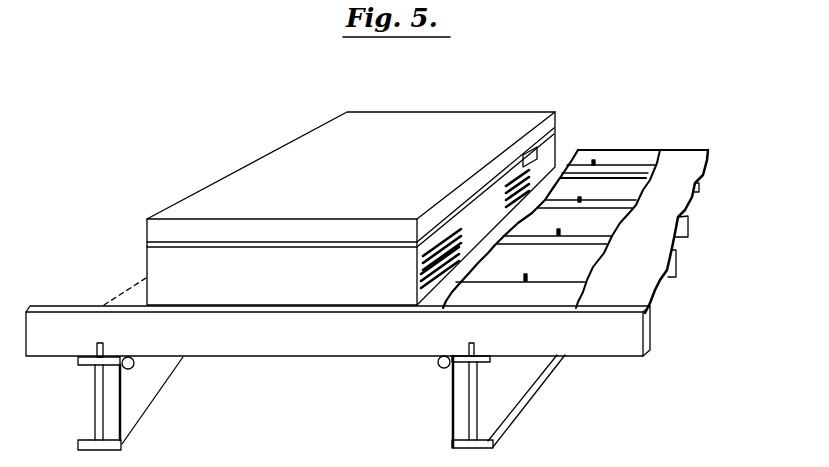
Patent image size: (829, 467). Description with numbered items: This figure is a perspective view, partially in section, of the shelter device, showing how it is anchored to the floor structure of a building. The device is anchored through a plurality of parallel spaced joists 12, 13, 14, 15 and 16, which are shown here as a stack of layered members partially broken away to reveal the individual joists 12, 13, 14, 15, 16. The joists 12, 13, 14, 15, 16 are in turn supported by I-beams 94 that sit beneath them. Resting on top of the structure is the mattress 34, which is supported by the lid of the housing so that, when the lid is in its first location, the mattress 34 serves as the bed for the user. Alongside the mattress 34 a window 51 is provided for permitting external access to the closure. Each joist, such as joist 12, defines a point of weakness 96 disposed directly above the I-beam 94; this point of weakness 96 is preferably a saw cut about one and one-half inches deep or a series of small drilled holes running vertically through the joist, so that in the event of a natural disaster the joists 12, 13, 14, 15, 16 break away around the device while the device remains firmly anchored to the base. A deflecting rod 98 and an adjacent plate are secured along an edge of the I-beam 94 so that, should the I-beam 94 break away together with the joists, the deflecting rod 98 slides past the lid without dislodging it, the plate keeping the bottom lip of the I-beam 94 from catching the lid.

The joist 12 is at (555, 337).
The joist 13 is at (566, 263).
The joist 14 is at (588, 229).
The joist 15 is at (621, 190).
The joist 16 is at (628, 157).
The mattress 34 is at (300, 178).
The window 51 is at (538, 128).
The I-beam 94 is at (100, 405).
The point of weakness 96 is at (100, 345).
The deflecting rod 98 is at (128, 369).